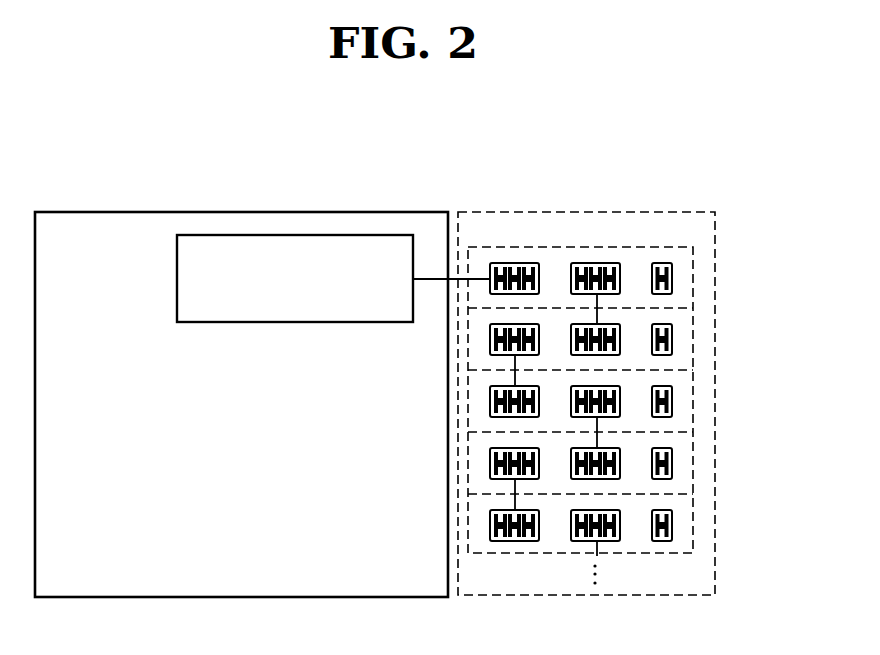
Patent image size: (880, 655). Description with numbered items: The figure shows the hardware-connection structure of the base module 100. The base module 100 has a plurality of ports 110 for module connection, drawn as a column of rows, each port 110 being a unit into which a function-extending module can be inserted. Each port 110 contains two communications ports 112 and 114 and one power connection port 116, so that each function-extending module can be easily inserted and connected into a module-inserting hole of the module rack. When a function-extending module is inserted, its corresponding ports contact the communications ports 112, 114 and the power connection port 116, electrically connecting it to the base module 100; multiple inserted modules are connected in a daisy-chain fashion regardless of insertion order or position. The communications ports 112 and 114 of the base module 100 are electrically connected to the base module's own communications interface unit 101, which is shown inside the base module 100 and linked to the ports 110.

The base module 100 is at (245, 198).
The communications interface unit 101 is at (177, 279).
The port 110 is at (693, 279).
The communications port 112 is at (517, 263).
The communications port 114 is at (597, 263).
The power connection port 116 is at (663, 263).